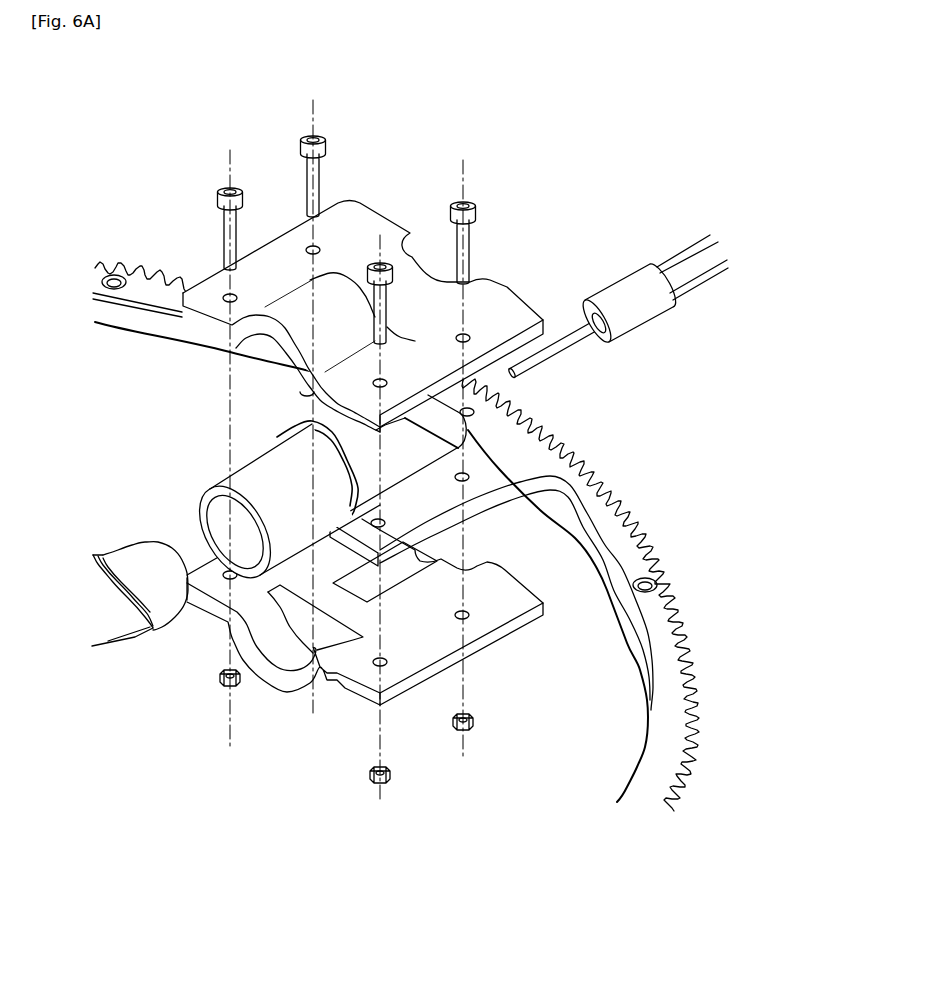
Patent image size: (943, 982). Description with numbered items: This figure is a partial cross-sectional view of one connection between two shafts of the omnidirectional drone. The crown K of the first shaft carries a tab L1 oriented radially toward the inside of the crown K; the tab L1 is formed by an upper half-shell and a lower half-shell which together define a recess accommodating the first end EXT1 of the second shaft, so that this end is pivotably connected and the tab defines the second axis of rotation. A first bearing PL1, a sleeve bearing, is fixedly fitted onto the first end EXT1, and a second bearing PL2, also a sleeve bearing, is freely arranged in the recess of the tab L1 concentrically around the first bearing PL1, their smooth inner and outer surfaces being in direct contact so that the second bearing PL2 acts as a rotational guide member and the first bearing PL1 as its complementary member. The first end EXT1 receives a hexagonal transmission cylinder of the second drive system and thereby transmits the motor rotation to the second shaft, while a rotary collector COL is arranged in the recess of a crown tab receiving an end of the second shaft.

The crown K is at (670, 692).
The tab L1 is at (418, 501).
The first bearing PL1 is at (142, 557).
The second bearing PL2 is at (243, 480).
The rotary collector COL is at (670, 317).
The first end EXT1 is at (113, 607).